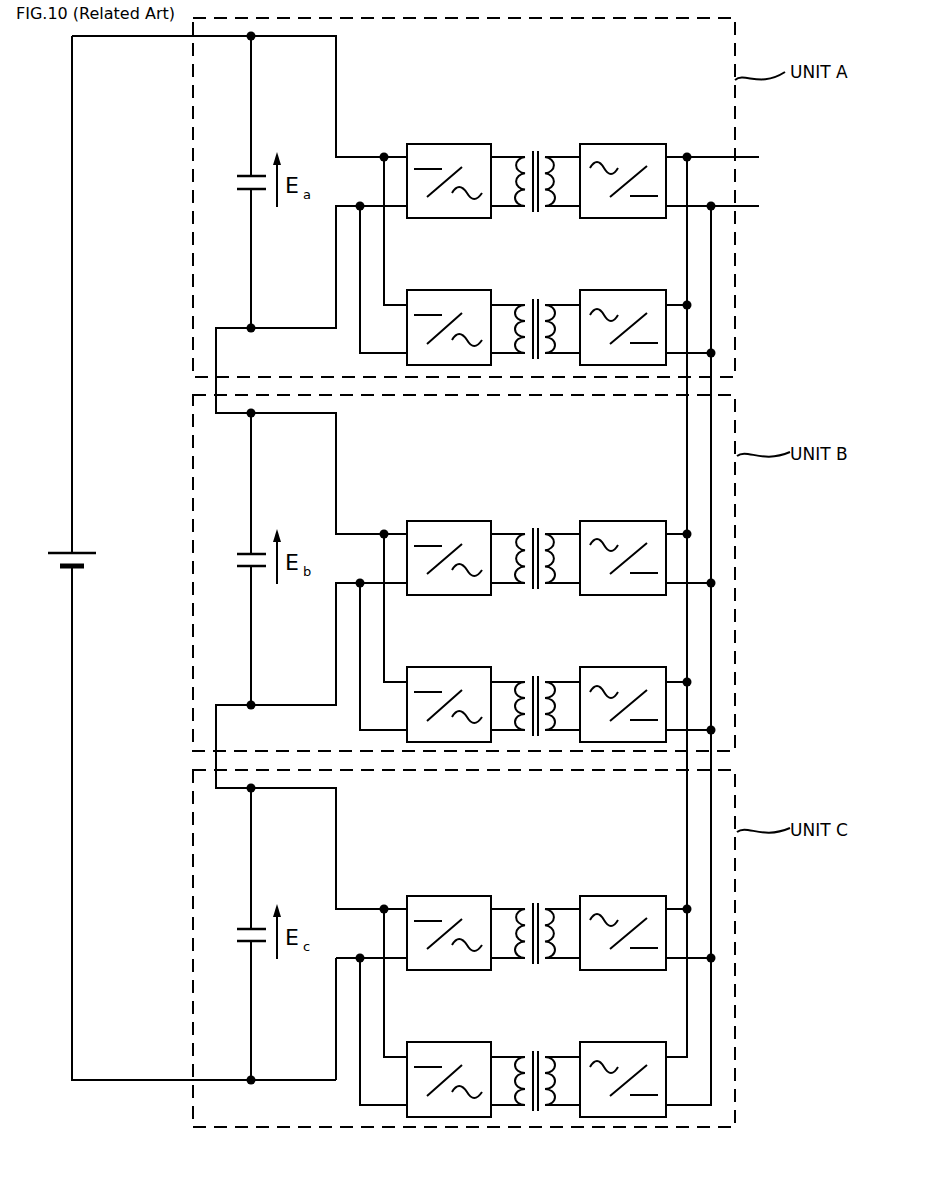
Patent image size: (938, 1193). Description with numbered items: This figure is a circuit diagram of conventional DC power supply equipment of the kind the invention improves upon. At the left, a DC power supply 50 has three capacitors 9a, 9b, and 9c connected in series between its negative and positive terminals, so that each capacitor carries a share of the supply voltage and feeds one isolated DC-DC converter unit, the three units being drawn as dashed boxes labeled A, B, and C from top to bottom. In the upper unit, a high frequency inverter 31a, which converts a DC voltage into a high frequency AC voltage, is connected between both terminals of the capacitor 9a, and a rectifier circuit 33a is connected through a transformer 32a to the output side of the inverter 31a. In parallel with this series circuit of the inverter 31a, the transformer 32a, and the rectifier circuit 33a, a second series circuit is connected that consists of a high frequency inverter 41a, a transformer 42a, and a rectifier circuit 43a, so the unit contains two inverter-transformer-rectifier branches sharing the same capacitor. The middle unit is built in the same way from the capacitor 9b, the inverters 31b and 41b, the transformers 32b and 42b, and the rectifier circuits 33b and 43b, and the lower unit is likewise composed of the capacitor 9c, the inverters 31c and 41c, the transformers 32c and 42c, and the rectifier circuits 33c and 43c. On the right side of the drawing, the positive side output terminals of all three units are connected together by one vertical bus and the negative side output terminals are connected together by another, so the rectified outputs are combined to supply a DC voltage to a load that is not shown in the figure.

The DC power supply 50 is at (62, 547).
The capacitor 9a is at (243, 168).
The capacitor 9b is at (243, 545).
The capacitor 9c is at (243, 920).
The high frequency inverter 31a is at (439, 148).
The transformer 32a is at (535, 150).
The rectifier circuit 33a is at (615, 148).
The high frequency inverter 41a is at (444, 298).
The transformer 42a is at (537, 298).
The rectifier circuit 43a is at (617, 298).
The high frequency inverter 31b is at (439, 525).
The transformer 32b is at (535, 527).
The rectifier circuit 33b is at (621, 525).
The high frequency inverter 41b is at (444, 675).
The transformer 42b is at (537, 675).
The rectifier circuit 43b is at (617, 675).
The high frequency inverter 31c is at (439, 900).
The transformer 32c is at (535, 902).
The rectifier circuit 33c is at (615, 900).
The high frequency inverter 41c is at (444, 1050).
The transformer 42c is at (537, 1050).
The rectifier circuit 43c is at (619, 1050).